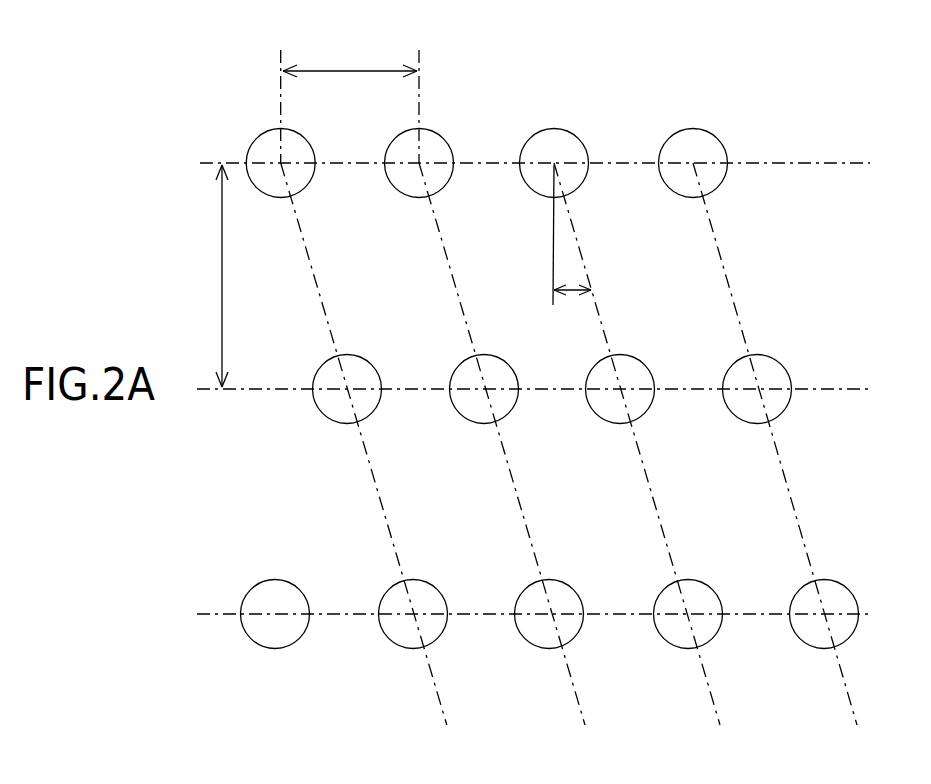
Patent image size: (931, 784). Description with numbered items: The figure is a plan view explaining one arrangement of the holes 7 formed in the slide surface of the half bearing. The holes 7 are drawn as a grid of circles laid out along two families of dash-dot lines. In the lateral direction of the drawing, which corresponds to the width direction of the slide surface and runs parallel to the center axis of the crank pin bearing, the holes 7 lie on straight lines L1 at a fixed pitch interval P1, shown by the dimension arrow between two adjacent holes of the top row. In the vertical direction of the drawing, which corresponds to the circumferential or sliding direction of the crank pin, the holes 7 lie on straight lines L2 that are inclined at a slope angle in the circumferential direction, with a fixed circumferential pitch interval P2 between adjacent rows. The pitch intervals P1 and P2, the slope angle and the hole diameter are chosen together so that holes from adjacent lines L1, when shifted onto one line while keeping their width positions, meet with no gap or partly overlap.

The hole 7 is at (687, 140).
The straight line extending in the width direction L1 is at (780, 163).
The inclined straight line L2 is at (733, 306).
The pitch interval in the width direction P1 is at (350, 87).
The pitch interval in the circumferential direction P2 is at (238, 276).